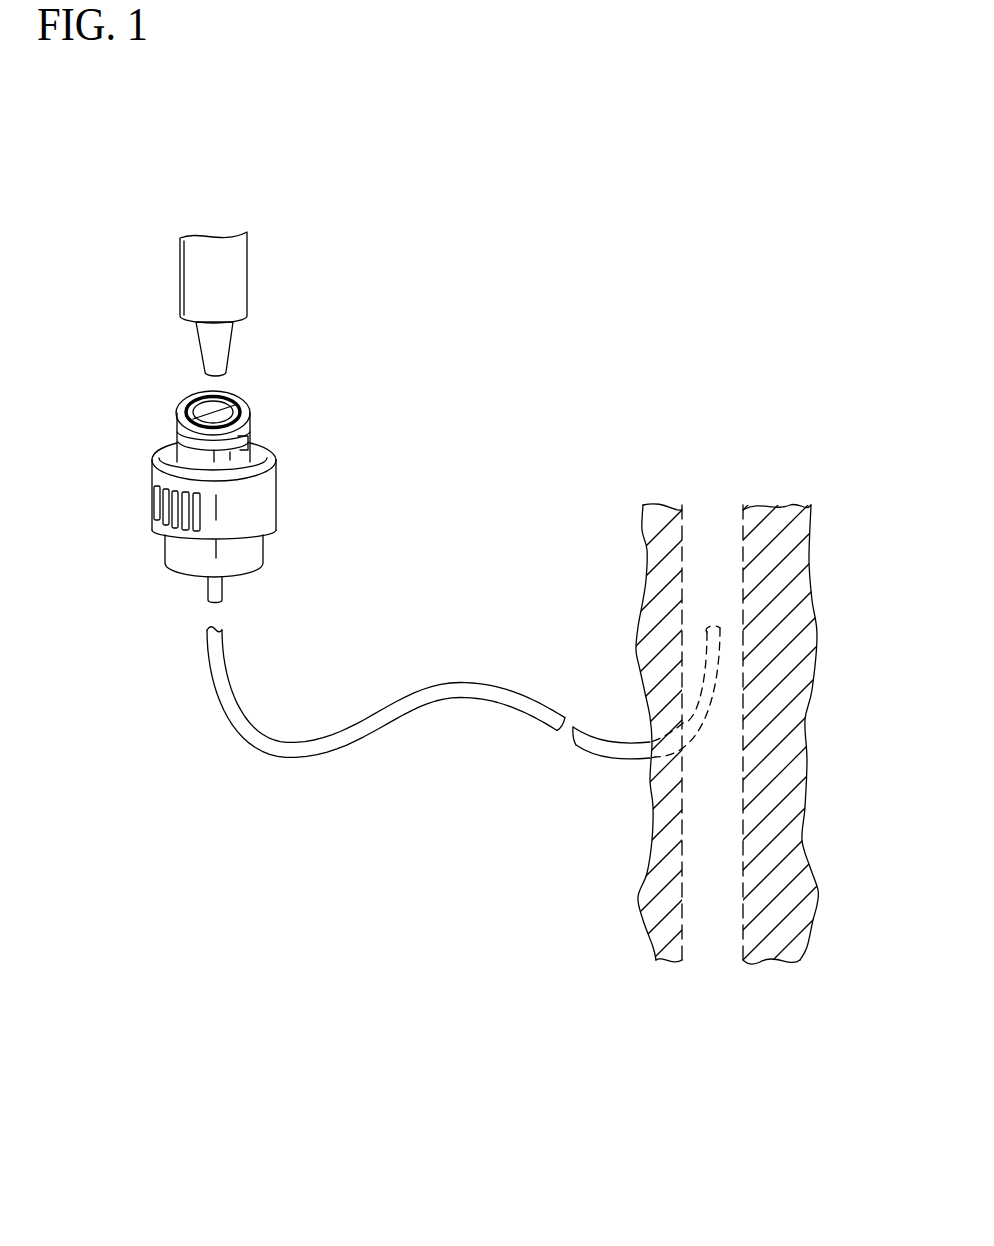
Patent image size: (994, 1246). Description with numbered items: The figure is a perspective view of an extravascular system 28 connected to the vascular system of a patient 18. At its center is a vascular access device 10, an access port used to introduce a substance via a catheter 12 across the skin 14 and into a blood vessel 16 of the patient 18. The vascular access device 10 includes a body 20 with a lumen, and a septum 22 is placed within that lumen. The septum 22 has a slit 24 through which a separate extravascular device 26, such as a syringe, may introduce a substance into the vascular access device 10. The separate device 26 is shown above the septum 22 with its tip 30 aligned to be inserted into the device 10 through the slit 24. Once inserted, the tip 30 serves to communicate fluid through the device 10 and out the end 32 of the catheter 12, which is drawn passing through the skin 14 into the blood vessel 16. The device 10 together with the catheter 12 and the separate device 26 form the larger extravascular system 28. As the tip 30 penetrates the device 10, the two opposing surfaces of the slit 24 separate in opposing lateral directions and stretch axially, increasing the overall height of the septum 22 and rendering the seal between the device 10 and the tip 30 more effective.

The vascular access device 10 is at (234, 479).
The catheter 12 is at (318, 747).
The skin 14 is at (657, 933).
The blood vessel 16 is at (717, 537).
The patient 18 is at (773, 950).
The body 20 is at (258, 502).
The septum 22 is at (201, 395).
The slit 24 is at (228, 400).
The separate extravascular device 26 is at (243, 265).
The extravascular system 28 is at (222, 748).
The tip 30 is at (210, 343).
The end 32 is at (712, 630).